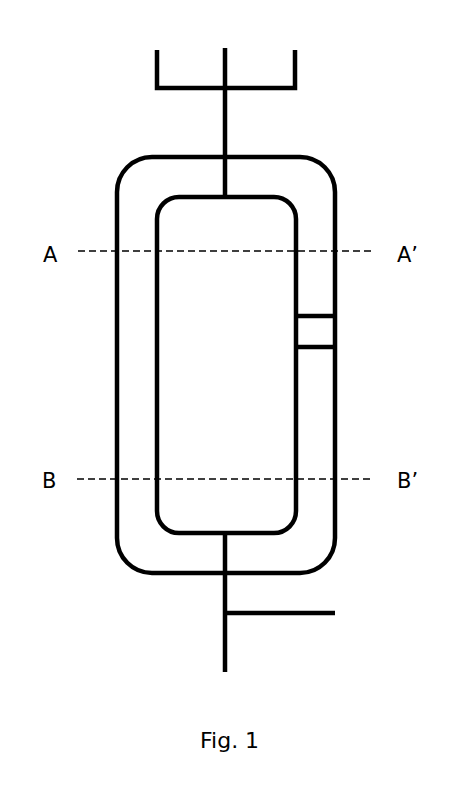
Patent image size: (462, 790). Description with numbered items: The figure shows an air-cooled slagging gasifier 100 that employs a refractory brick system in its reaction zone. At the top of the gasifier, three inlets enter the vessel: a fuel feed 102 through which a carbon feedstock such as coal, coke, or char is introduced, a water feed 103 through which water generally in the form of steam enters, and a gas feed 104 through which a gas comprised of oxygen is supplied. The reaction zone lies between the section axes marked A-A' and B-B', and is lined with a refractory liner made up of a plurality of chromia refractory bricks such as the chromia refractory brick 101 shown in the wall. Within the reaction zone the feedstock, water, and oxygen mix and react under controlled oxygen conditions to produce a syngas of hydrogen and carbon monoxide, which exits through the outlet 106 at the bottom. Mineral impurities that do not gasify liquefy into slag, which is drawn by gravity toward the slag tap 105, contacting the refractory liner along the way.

The slagging gasifier 100 is at (355, 167).
The chromia refractory brick 101 is at (313, 332).
The fuel feed 102 is at (155, 67).
The water feed 103 is at (223, 63).
The gas feed 104 is at (298, 65).
The slag tap 105 is at (220, 642).
The outlet 106 is at (307, 617).